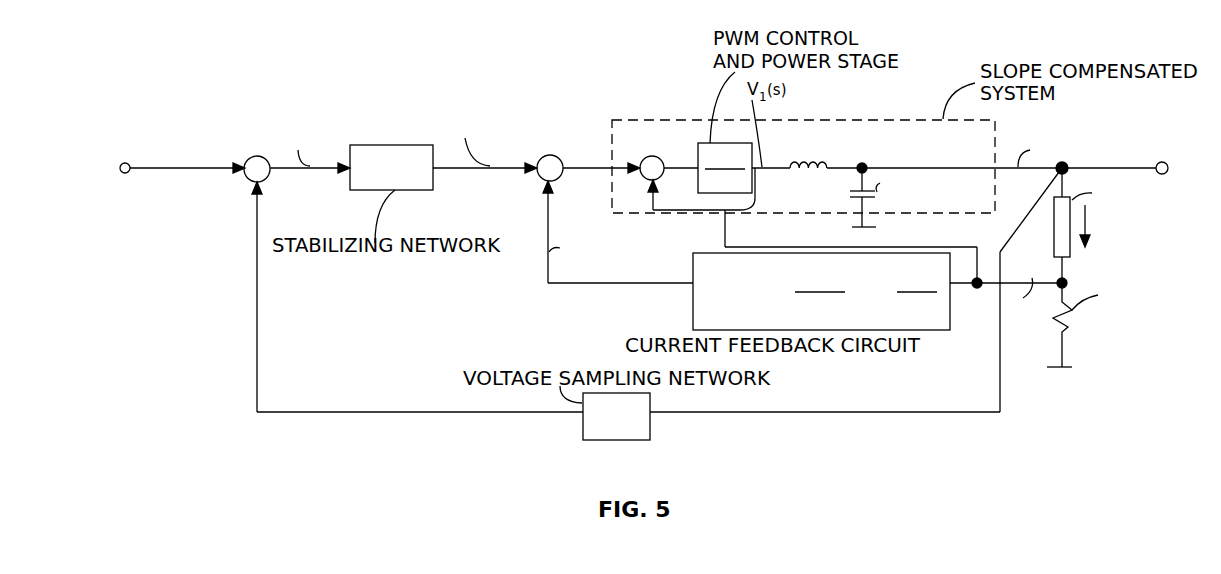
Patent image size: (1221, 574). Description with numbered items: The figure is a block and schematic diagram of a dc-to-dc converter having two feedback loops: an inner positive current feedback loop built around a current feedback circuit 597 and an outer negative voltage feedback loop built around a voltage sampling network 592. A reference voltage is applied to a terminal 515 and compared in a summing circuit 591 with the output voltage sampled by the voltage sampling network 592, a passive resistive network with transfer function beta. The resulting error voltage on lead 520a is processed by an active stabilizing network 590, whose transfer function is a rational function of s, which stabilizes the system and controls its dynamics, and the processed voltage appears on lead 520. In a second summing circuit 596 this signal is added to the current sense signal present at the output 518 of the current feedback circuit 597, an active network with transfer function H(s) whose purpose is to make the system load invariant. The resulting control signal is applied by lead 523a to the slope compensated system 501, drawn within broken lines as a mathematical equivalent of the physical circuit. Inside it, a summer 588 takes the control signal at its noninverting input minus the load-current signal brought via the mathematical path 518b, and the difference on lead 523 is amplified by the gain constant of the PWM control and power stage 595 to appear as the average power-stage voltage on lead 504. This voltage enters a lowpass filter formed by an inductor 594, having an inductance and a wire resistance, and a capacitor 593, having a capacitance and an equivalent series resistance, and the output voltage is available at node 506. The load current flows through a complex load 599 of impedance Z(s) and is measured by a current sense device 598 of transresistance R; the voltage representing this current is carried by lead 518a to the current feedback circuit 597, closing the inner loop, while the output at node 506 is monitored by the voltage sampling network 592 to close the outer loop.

The terminal 515 is at (125, 162).
The summing circuit 591 is at (250, 183).
The lead 520a is at (320, 172).
The stabilizing network 590 is at (386, 145).
The lead 520 is at (468, 172).
The lead 523a is at (577, 166).
The summing circuit 596 is at (540, 183).
The output 518 is at (546, 288).
The slope compensated system 501 is at (872, 118).
The lead 523 is at (697, 158).
The summer 588 is at (652, 156).
The PWM control and power stage 595 is at (682, 158).
The inductor 594 is at (814, 176).
The lead 504 is at (757, 207).
The path 518b is at (697, 212).
The capacitor 593 is at (875, 198).
The node 506 is at (1064, 167).
The complex load 599 is at (1068, 258).
The lead 518a is at (1008, 293).
The current sense device 598 is at (1068, 325).
The current feedback circuit 597 is at (692, 262).
The voltage sampling network 592 is at (617, 441).